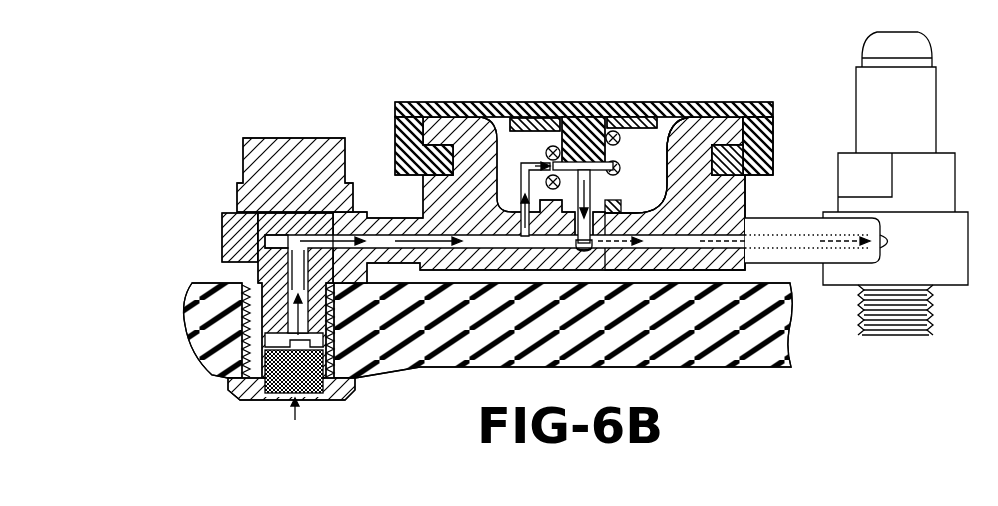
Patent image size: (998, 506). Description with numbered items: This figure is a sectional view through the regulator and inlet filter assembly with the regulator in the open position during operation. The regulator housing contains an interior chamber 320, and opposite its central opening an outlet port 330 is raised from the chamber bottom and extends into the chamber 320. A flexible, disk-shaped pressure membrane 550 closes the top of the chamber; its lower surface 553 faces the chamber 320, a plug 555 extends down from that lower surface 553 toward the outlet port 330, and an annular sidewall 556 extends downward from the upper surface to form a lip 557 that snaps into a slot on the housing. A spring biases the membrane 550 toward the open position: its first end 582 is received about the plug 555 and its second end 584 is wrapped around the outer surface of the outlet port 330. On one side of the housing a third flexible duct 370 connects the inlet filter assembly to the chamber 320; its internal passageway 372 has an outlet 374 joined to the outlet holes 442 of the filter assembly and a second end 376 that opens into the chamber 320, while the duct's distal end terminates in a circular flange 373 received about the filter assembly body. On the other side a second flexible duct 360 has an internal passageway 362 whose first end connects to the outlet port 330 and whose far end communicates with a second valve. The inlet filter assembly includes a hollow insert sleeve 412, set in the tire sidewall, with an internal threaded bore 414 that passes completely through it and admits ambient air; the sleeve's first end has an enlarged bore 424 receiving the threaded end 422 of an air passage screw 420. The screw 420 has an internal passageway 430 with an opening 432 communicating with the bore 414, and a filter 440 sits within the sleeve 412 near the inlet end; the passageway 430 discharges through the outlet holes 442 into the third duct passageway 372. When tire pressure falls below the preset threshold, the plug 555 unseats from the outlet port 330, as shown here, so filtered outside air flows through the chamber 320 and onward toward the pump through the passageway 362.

The interior chamber 320 is at (648, 180).
The outlet port 330 is at (588, 217).
The second flexible duct 360 is at (793, 262).
The internal passageway 362 is at (823, 262).
The third flexible duct 370 is at (390, 223).
The internal passageway 372 is at (397, 242).
The circular flange 373 is at (222, 236).
The outlet 374 is at (333, 238).
The second end 376 is at (530, 222).
The insert sleeve 412 is at (225, 403).
The internal threaded bore 414 is at (357, 400).
The air passage screw 420 is at (255, 132).
The threaded end 422 is at (258, 262).
The enlarged bore 424 is at (215, 300).
The internal passageway 430 is at (289, 297).
The opening 432 is at (262, 344).
The filter 440 is at (257, 400).
The outlet holes 442 is at (318, 238).
The pressure membrane 550 is at (455, 95).
The lower surface 553 is at (673, 118).
The plug 555 is at (568, 116).
The annular sidewall 556 is at (773, 137).
The lip 557 is at (722, 163).
The first end 582 is at (618, 116).
The second end 584 is at (594, 244).